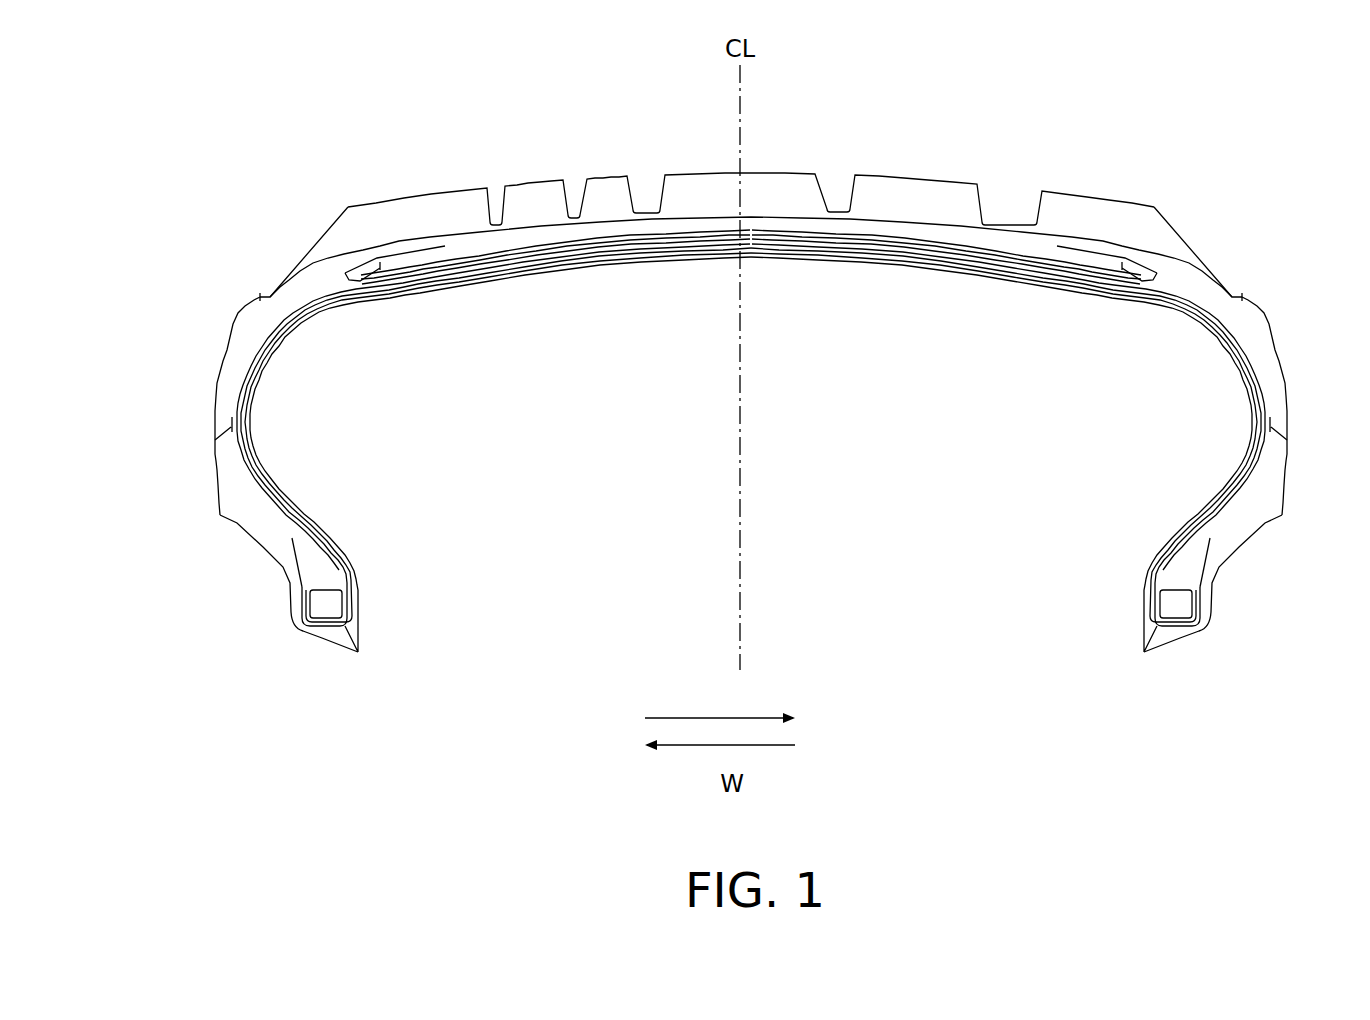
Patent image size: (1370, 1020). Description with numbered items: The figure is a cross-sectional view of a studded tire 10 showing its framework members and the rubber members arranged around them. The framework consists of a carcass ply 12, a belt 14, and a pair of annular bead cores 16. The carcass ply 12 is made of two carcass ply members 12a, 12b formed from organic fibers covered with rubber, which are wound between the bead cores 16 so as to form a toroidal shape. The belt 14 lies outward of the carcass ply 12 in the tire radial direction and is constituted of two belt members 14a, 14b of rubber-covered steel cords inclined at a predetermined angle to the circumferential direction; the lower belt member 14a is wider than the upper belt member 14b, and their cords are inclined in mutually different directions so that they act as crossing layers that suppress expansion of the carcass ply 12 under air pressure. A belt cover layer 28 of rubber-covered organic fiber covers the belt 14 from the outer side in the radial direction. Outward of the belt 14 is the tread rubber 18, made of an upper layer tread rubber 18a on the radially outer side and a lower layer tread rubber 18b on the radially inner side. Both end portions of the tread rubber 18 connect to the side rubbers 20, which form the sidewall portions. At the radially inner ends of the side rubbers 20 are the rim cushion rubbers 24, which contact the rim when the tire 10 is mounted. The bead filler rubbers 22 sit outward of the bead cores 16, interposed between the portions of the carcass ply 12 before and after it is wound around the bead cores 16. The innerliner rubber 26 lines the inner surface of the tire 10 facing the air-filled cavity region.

The studded tire 10 is at (1181, 175).
The carcass ply 12 is at (751, 435).
The carcass ply member 12a is at (1227, 350).
The carcass ply member 12b is at (1220, 327).
The belt 14 is at (751, 182).
The belt member 14a is at (922, 250).
The belt member 14b is at (967, 247).
The bead core 16 is at (327, 603).
The tread rubber 18 is at (795, 235).
The upper layer tread rubber 18a is at (1143, 223).
The lower layer tread rubber 18b is at (1146, 257).
The side rubber 20 is at (240, 362).
The bead filler rubber 22 is at (313, 563).
The rim cushion rubber 24 is at (240, 495).
The innerliner rubber 26 is at (693, 258).
The belt cover layer 28 is at (398, 250).